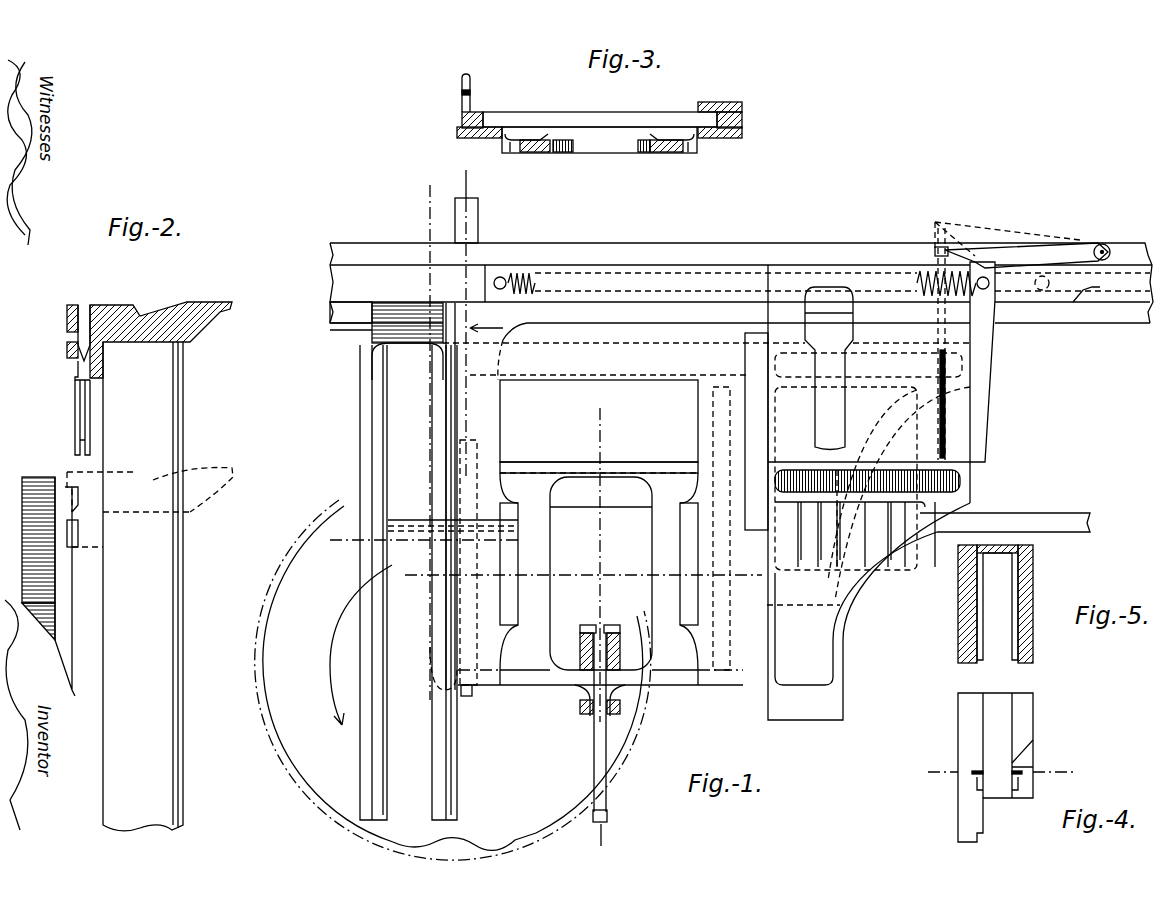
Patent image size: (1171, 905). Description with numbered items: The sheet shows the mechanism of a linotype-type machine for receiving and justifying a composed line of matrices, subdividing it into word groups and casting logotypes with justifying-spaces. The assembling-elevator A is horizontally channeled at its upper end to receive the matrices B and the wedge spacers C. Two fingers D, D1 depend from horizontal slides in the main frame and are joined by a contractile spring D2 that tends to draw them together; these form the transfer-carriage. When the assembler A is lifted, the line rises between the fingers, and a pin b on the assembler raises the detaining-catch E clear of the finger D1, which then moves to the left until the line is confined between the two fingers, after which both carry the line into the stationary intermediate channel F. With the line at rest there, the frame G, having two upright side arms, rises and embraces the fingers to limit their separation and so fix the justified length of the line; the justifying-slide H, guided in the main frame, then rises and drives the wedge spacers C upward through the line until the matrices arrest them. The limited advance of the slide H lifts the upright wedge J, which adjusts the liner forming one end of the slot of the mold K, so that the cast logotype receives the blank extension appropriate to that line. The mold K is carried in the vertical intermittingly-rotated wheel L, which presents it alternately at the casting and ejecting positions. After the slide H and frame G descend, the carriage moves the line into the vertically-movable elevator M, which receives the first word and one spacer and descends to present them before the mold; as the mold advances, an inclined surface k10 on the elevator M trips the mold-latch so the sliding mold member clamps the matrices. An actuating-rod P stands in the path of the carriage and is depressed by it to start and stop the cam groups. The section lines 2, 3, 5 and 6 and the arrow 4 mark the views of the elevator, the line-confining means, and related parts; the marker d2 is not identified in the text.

In FIG. 1, the assembling-elevator A is at (929, 591).
In FIG. 2, the matrices B is at (76, 372).
In FIG. 1, the matrices B is at (962, 480).
In FIG. 4, the matrices B is at (1018, 812).
In FIG. 2, the wedge spacers C is at (76, 420).
In FIG. 1, the wedge spacers C is at (855, 534).
In FIG. 1, the finger D is at (752, 317).
In FIG. 1, the finger D1 is at (982, 340).
In FIG. 1, the contractile spring D2 is at (535, 268).
In FIG. 1, the detaining-catch E is at (988, 254).
In FIG. 1, the stationary channel F is at (670, 366).
In FIG. 3, the frame G is at (462, 119).
In FIG. 1, the frame G is at (460, 600).
In FIG. 3, the justifying-slide H is at (644, 148).
In FIG. 1, the justifying-slide H is at (536, 478).
In FIG. 1, the upright wedge J is at (455, 628).
In FIG. 2, the mold K is at (80, 531).
In FIG. 1, the mold K is at (420, 530).
In FIG. 2, the wheel L is at (58, 632).
In FIG. 1, the wheel L is at (453, 602).
In FIG. 2, the elevator M is at (161, 556).
In FIG. 1, the elevator M is at (372, 345).
In FIG. 5, the elevator M is at (995, 604).
In FIG. 4, the elevator M is at (958, 734).
In FIG. 1, the actuating-rod P is at (829, 368).
In FIG. 1, the pin b is at (940, 430).
In FIG. 1, the rod d2 is at (478, 229).
In FIG. 2, the inclined surface k10 is at (66, 336).
In FIG. 1, the section line 2 2 is at (422, 430).
In FIG. 1, the section line 3 3 is at (584, 565).
In FIG. 1, the arrow 4 is at (486, 320).
In FIG. 2, the section line 5 5 is at (76, 337).
In FIG. 1, the section line 5 5 is at (387, 320).
In FIG. 4, the section line 5 5 is at (1001, 771).
In FIG. 1, the section line 6 6 is at (540, 508).